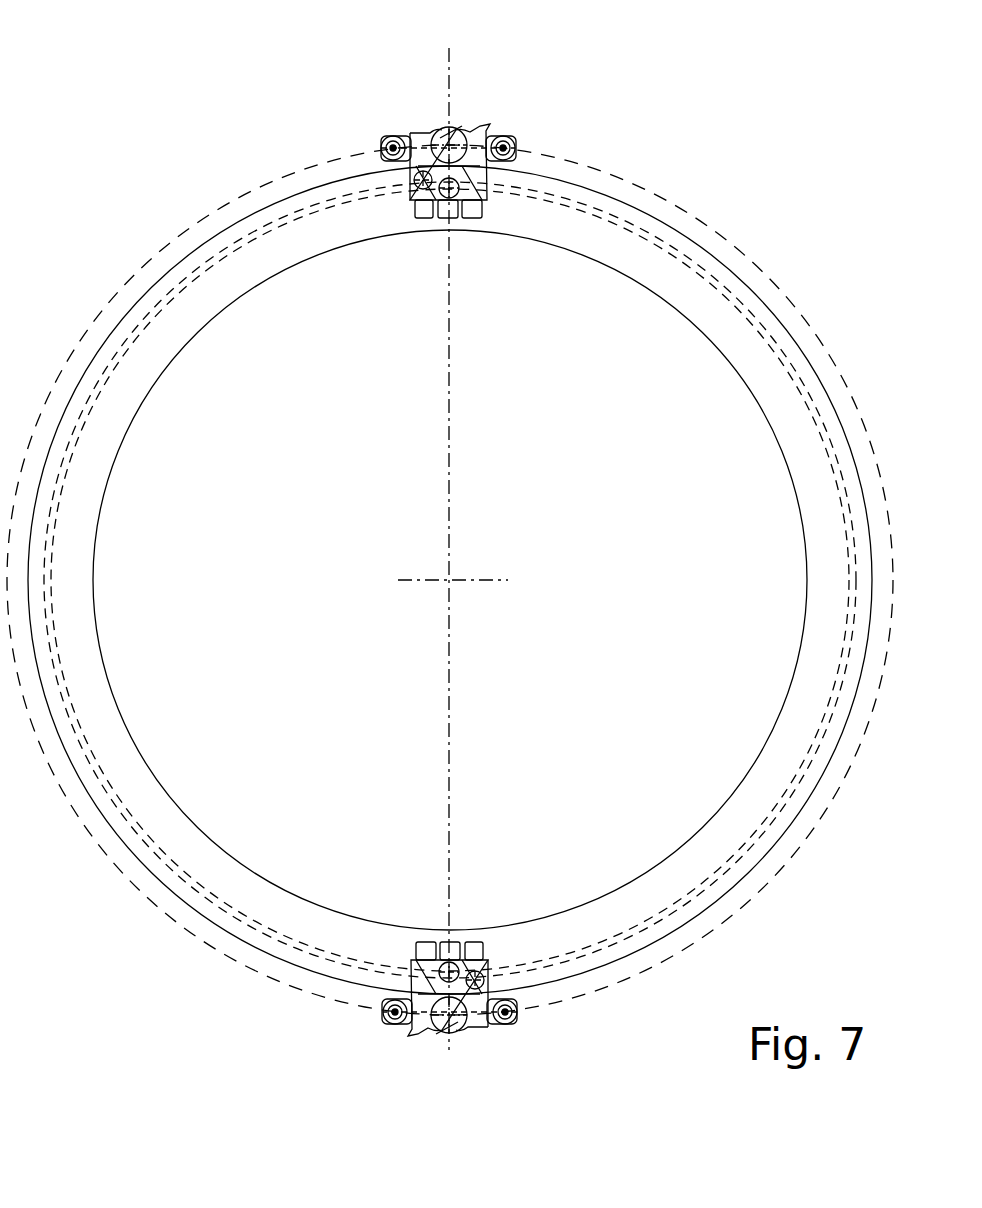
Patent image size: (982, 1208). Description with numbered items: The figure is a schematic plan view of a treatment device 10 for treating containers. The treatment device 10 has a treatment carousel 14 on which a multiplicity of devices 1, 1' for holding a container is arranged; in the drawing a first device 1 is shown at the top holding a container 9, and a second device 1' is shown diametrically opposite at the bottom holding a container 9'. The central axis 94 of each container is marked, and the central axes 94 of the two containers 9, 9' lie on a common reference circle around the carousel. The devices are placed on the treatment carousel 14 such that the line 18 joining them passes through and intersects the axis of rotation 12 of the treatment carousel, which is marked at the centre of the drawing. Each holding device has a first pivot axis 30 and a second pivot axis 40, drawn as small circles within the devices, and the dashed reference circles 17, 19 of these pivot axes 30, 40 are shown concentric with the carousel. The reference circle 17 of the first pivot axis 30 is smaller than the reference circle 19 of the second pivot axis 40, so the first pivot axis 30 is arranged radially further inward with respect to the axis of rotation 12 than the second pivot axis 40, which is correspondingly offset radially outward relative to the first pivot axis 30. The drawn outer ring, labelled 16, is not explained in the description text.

The first device 1 is at (440, 114).
The second device 1' is at (424, 1052).
The container 9 is at (438, 94).
The container 9' is at (467, 1065).
The treatment device 10 is at (742, 114).
The axis of rotation 12 is at (452, 578).
The treatment carousel 14 is at (802, 413).
The outer ring 16 is at (733, 240).
The reference circle 17 is at (215, 260).
The line 18 is at (452, 808).
The reference circle 19 is at (280, 215).
The first pivot axis 30 is at (471, 248).
The second pivot axis 40 is at (397, 244).
The central axis 94 is at (481, 95).